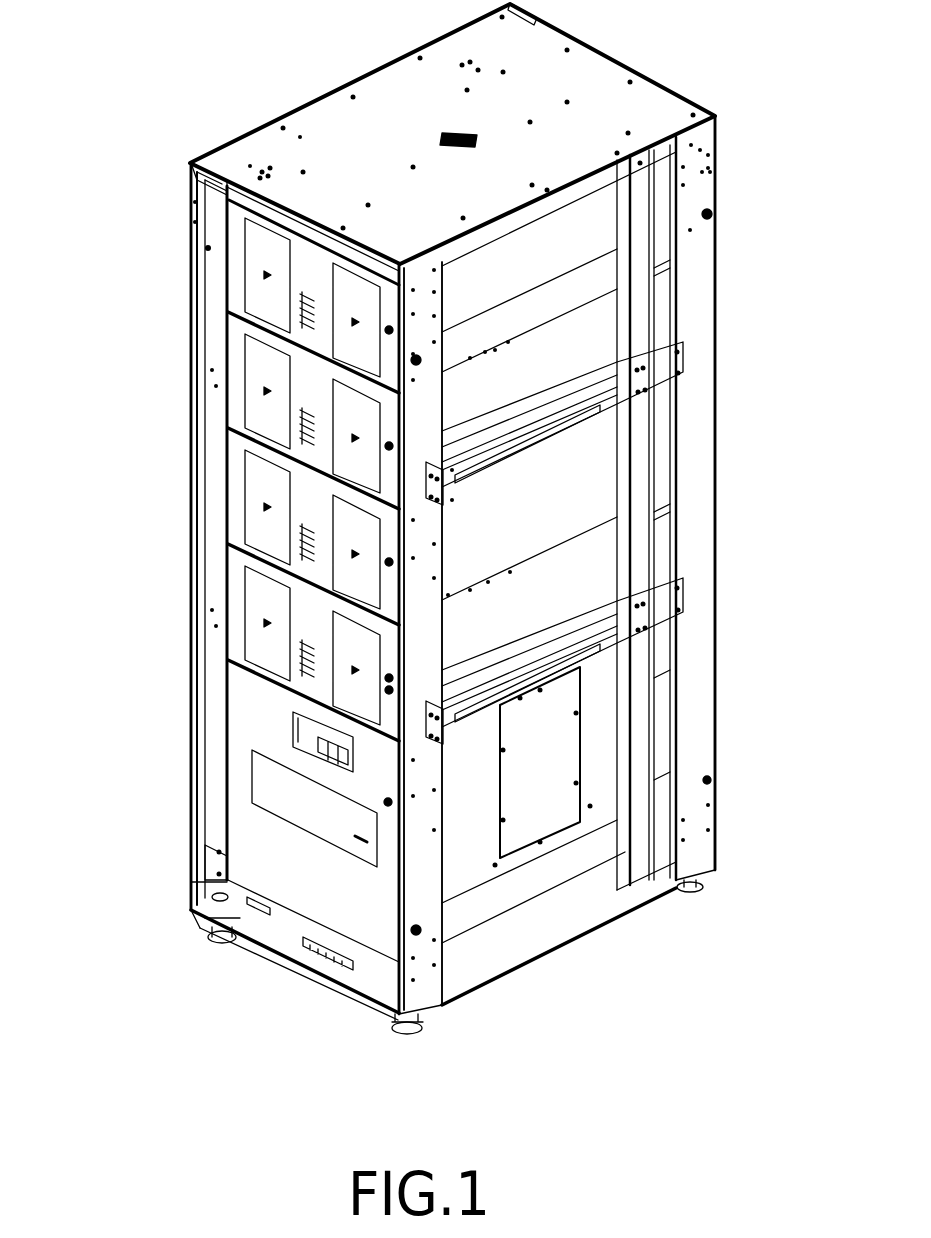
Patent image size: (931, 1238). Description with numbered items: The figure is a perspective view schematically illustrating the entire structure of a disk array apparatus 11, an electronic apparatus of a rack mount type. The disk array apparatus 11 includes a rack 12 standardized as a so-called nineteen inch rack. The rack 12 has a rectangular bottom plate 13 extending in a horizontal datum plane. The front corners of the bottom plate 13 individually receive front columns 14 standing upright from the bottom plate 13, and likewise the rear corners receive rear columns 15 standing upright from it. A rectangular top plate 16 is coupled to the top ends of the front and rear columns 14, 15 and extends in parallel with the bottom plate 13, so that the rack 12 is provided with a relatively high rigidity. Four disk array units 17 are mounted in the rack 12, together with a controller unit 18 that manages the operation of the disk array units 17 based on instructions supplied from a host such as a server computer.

The disk array apparatus 11 is at (237, 137).
The rack 12 is at (187, 567).
The bottom plate 13 is at (557, 948).
The front columns 14 is at (192, 832).
The rear columns 15 is at (715, 646).
The top plate 16 is at (607, 68).
The disk array units 17 is at (235, 275).
The controller unit 18 is at (237, 745).